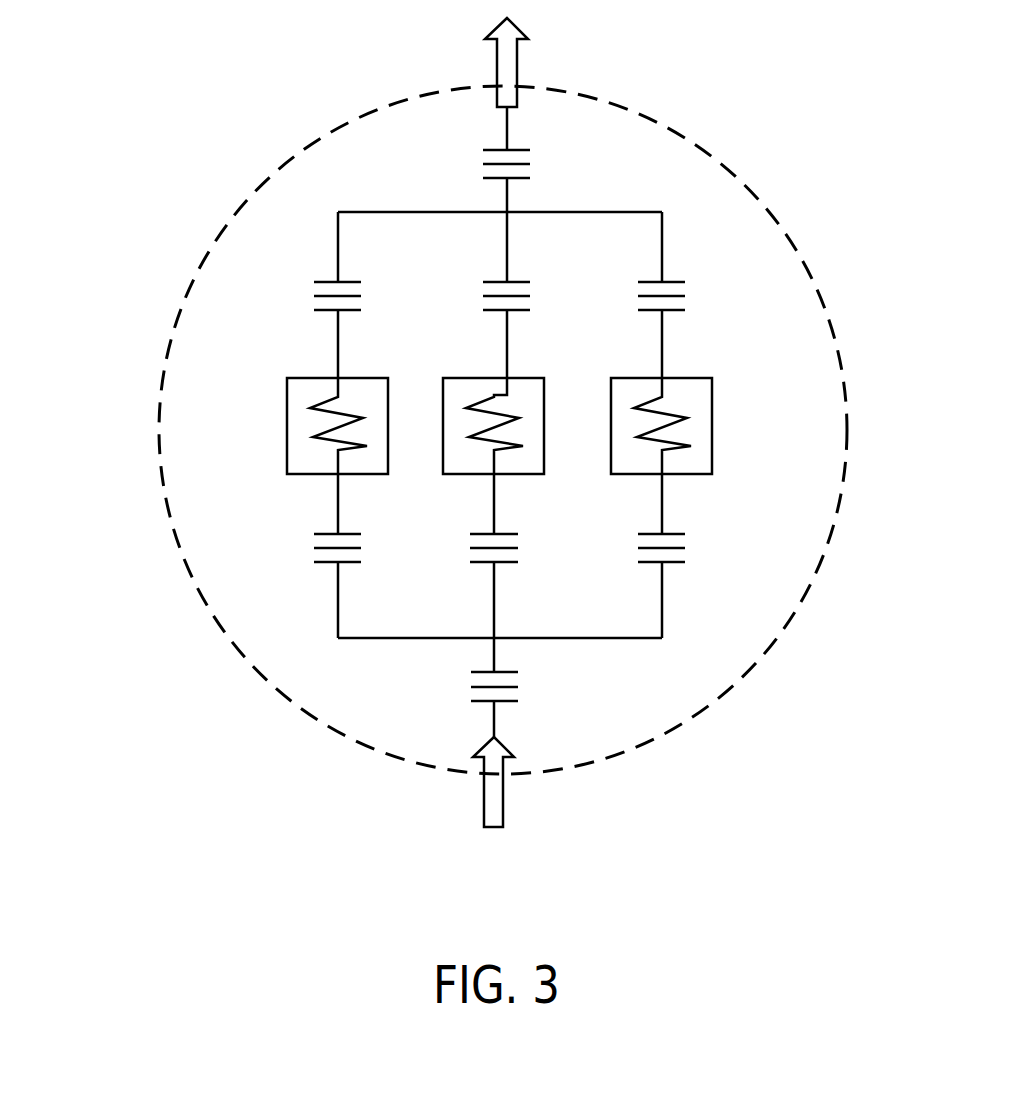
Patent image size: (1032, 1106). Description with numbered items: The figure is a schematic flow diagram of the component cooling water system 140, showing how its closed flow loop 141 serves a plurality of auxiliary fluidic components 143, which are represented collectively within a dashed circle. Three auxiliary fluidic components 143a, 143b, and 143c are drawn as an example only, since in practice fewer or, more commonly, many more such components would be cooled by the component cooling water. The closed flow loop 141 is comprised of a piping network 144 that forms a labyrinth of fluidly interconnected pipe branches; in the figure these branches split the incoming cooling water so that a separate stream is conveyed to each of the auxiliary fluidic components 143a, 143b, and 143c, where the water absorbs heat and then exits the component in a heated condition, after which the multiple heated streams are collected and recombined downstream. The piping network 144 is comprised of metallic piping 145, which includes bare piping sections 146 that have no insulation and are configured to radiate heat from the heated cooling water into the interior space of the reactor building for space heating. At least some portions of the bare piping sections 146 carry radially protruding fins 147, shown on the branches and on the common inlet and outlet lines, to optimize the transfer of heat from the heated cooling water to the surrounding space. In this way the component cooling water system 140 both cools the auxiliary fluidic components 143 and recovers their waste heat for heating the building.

The component cooling water (CCW) system 140 is at (186, 148).
The closed flow loop 141 is at (560, 182).
The auxiliary fluidic components 143 is at (152, 350).
The first auxiliary fluidic component 143a is at (287, 437).
The second auxiliary fluidic component 143b is at (457, 476).
The third auxiliary fluidic component 143c is at (714, 403).
The piping network 144 is at (397, 670).
The metallic piping 145 is at (680, 605).
The bare piping sections 146 is at (612, 640).
The radially protruding fins 147 is at (491, 148).